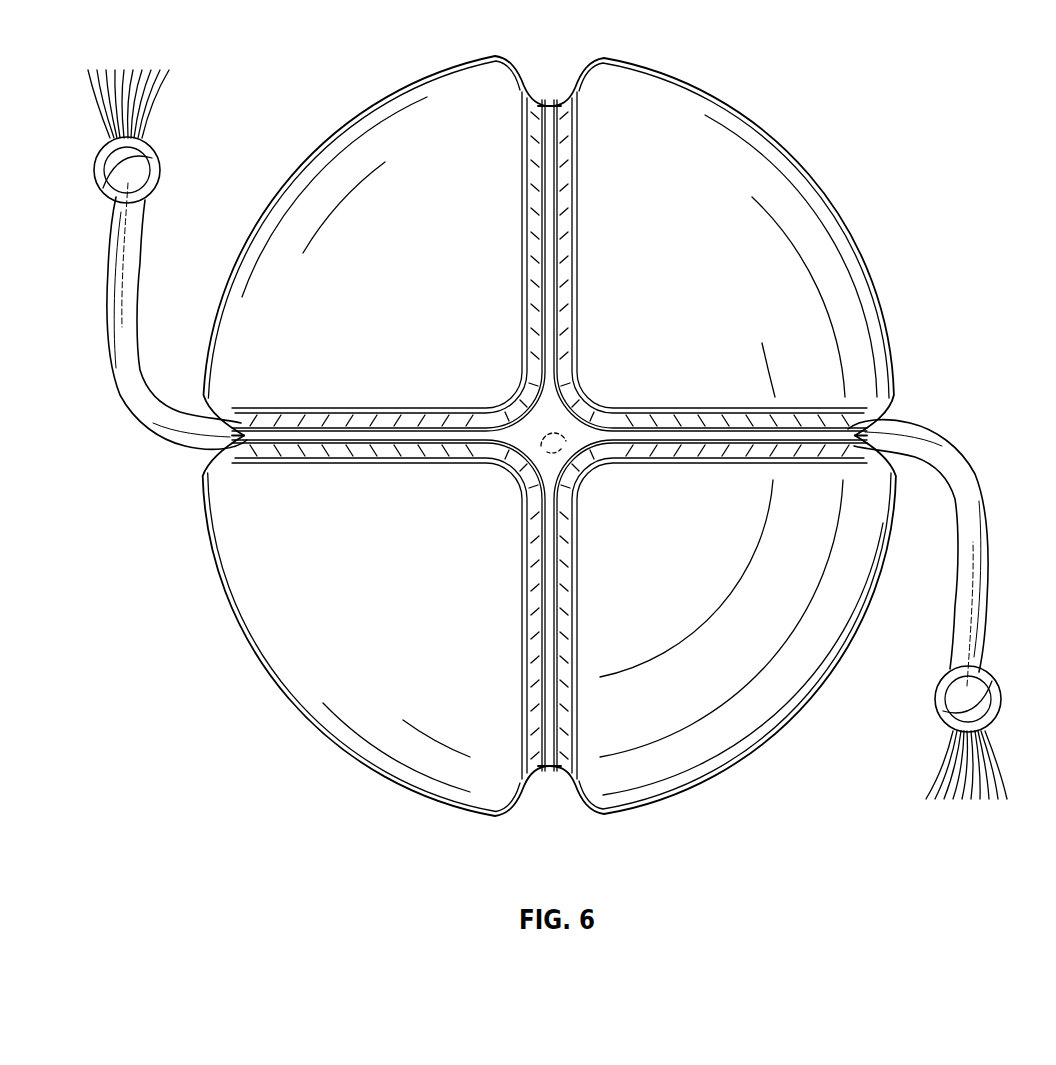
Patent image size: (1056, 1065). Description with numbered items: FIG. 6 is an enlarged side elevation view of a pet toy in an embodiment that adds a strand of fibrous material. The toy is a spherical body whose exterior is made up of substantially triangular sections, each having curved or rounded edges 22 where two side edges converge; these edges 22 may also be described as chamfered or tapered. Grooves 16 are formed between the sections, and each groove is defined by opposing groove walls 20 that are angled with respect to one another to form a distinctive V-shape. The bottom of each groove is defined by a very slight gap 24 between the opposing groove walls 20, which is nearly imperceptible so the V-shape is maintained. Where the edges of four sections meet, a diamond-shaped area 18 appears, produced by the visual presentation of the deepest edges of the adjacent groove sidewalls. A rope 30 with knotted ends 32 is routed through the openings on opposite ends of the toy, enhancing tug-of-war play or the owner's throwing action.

The groove 16 is at (549, 74).
The diamond-shaped area 18 is at (552, 428).
The groove wall 20 is at (540, 150).
The curved or rounded edge 22 is at (497, 55).
The gap 24 is at (552, 240).
The rope 30 is at (122, 266).
The knotted end 32 is at (150, 157).